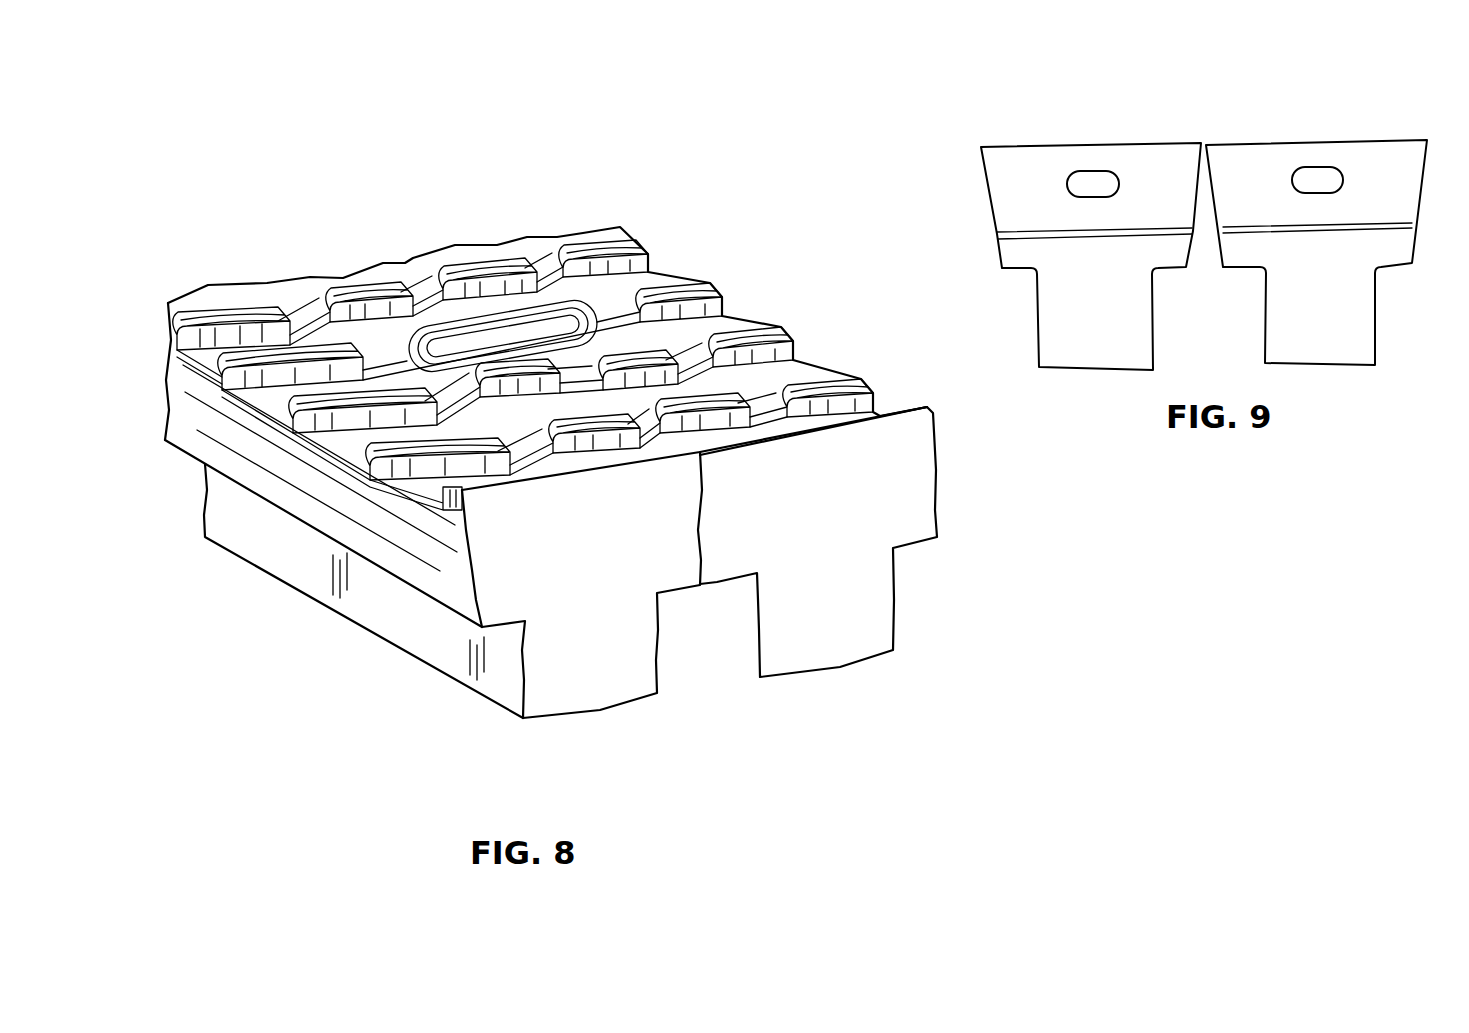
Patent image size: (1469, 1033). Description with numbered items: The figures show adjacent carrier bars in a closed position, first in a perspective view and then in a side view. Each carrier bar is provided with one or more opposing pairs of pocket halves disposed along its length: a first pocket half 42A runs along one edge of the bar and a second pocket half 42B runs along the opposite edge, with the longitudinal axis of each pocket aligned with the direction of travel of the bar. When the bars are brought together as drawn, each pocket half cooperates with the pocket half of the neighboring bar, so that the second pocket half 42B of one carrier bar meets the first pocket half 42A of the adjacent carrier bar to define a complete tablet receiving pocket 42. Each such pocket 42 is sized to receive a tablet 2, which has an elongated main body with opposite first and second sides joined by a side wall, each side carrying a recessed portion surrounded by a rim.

The tablet 2 is at (397, 277).
The tablet receiving pocket 42 is at (585, 382).
The first pocket half 42A is at (530, 378).
The second pocket half 42B is at (600, 388).